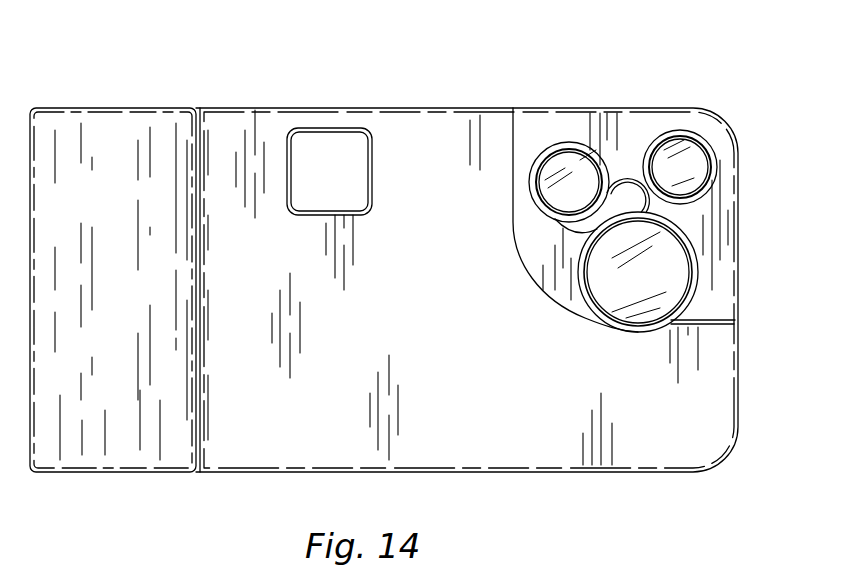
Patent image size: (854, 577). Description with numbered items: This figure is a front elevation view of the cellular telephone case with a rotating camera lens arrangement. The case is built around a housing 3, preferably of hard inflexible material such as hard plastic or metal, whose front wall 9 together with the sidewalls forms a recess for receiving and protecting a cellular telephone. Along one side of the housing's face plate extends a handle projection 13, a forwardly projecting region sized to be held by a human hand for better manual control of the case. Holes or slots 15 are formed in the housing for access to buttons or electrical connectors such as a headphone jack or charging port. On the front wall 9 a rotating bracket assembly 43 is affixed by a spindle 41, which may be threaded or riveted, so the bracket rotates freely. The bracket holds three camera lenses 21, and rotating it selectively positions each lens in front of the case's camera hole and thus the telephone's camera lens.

The housing 3 is at (567, 86).
The handle projection 13 is at (110, 130).
The holes or slots 15 is at (340, 152).
The front wall 9 is at (488, 120).
The rotating bracket assembly 43 is at (627, 158).
The camera lenses 21 is at (708, 153).
The spindle 41 is at (673, 203).